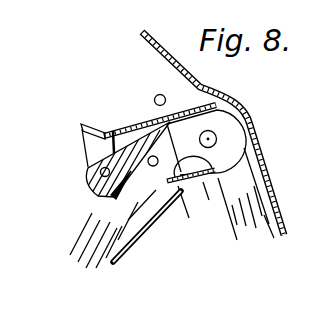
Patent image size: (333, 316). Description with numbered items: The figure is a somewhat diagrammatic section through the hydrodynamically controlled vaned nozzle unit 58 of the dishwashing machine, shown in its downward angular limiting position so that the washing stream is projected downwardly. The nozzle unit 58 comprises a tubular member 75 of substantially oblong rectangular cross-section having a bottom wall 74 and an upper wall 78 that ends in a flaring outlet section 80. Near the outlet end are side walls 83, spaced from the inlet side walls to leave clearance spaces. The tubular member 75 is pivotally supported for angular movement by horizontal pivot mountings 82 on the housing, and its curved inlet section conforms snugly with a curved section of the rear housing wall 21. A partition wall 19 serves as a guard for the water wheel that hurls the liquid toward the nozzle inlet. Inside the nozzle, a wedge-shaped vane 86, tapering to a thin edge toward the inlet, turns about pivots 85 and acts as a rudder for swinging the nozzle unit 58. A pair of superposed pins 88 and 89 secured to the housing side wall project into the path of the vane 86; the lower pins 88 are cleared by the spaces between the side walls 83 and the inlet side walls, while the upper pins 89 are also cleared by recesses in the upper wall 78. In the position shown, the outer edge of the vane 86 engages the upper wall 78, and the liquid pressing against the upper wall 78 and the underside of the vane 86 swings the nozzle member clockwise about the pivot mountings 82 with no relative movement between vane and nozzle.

The partition wall 19 is at (132, 245).
The rear wall 21 is at (270, 177).
The nozzle unit 58 is at (75, 140).
The bottom wall 74 is at (202, 198).
The tubular member 75 is at (198, 104).
The upper wall 78 is at (137, 122).
The flaring outlet section 80 is at (82, 130).
The pivot mountings 82 is at (214, 138).
The side walls 83 is at (84, 147).
The pivots 85 is at (101, 170).
The vane 86 is at (95, 192).
The lower pins 88 is at (155, 167).
The upper pins 89 is at (158, 95).